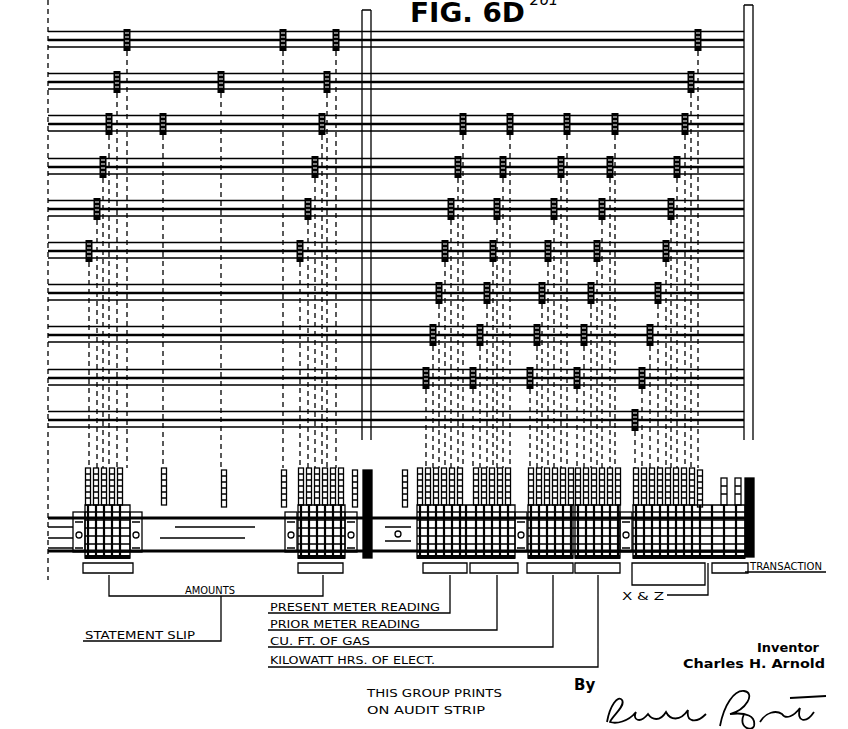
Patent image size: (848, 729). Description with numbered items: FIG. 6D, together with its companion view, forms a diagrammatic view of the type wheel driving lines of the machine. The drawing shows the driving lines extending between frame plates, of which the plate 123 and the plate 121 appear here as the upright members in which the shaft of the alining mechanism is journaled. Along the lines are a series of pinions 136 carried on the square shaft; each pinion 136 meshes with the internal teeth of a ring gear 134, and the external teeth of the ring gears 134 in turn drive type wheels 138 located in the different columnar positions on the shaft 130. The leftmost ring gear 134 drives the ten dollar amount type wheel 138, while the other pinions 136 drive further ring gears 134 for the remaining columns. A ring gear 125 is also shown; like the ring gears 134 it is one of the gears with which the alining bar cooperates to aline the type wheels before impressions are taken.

The plate 121 is at (754, 13).
The plate 123 is at (371, 13).
The ring gear 125 is at (741, 480).
The shaft 130 is at (192, 526).
The ring gear 134 is at (93, 468).
The pinion 136 is at (103, 155).
The ten dollar amount type wheel 138 is at (98, 573).